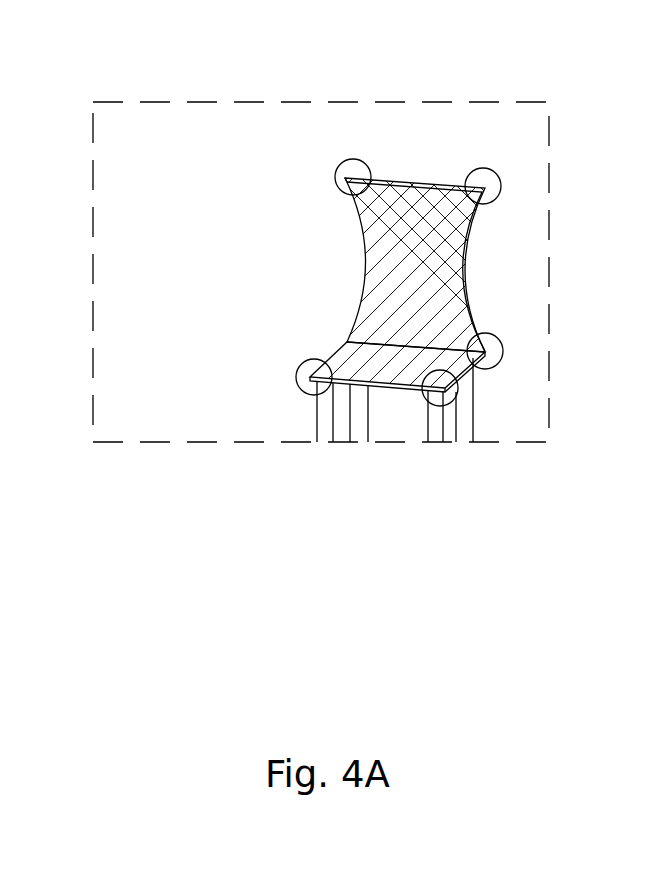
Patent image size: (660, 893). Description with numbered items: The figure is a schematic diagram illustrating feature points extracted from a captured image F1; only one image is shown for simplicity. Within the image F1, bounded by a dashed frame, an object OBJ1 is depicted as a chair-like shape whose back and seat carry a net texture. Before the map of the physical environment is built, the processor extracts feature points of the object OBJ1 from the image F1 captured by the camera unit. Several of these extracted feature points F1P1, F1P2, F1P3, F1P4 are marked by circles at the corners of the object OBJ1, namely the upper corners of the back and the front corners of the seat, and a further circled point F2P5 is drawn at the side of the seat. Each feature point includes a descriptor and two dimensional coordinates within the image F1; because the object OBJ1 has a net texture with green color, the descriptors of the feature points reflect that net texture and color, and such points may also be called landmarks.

The image F1 is at (108, 55).
The object OBJ1 is at (465, 262).
The feature point F1P1 is at (483, 168).
The feature point F1P2 is at (353, 158).
The feature point F1P3 is at (298, 383).
The feature point F1P4 is at (455, 404).
The fifth feature point of second frame F2P5 is at (502, 342).